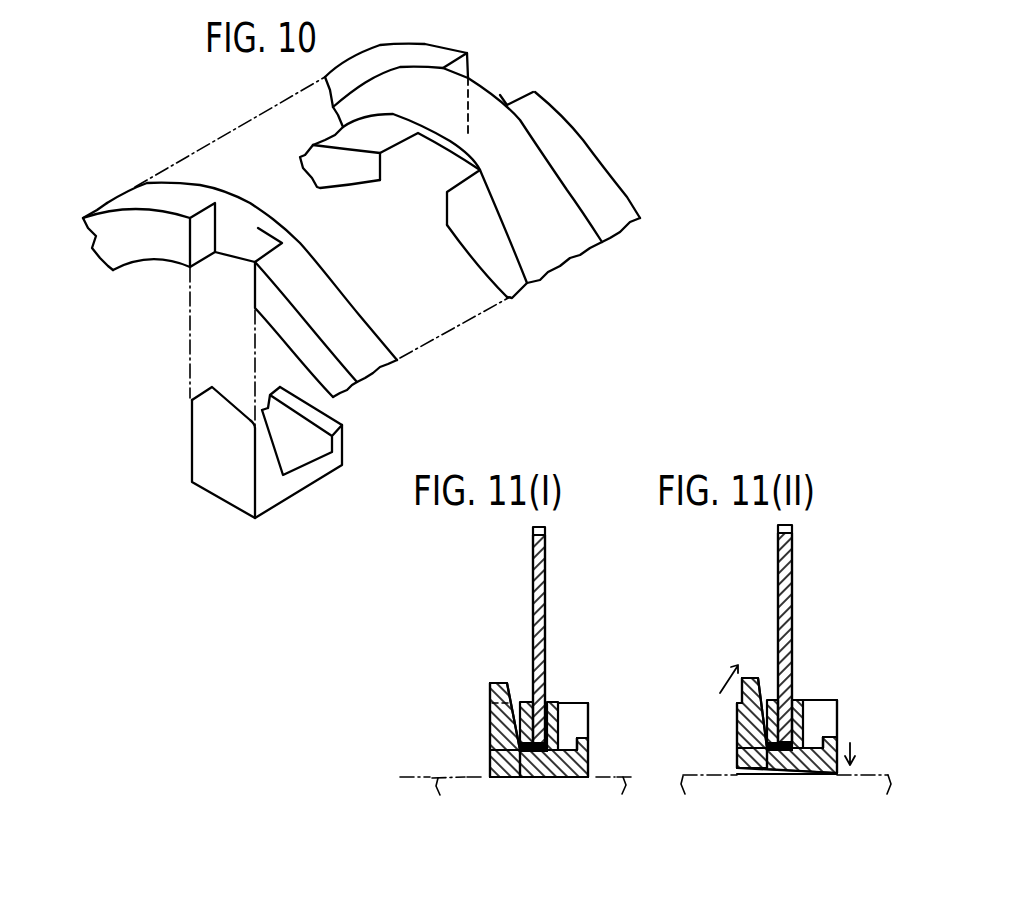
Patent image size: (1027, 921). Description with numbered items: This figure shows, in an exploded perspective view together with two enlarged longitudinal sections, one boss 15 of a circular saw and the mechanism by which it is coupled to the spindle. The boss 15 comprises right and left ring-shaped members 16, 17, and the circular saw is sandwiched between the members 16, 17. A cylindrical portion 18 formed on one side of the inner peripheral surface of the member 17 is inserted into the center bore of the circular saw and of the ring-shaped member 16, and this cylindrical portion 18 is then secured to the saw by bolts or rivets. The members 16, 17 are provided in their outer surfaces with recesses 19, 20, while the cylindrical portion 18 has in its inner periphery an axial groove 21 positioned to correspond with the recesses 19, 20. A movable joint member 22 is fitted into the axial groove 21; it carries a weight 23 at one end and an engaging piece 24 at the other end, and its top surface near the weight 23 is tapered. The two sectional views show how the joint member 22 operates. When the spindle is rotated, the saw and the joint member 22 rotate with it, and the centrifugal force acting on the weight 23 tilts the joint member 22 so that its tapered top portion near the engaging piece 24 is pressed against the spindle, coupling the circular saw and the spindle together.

The boss 15 is at (810, 698).
In FIG. 10, the ring-shaped member 16 is at (150, 197).
In FIG. 10, the ring-shaped member 17 is at (583, 153).
In FIG. 10, the cylindrical portion 18 is at (543, 260).
In FIG. 10, the recess 19 is at (227, 253).
In FIG. 10, the recess 20 is at (500, 92).
In FIG. 10, the axial groove 21 is at (400, 167).
The axial groove 21 is at (528, 780).
In FIG. 10, the movable joint member 22 is at (297, 487).
In FIG. 10, the weight 23 is at (198, 413).
In FIG. 10, the engaging piece 24 is at (343, 420).